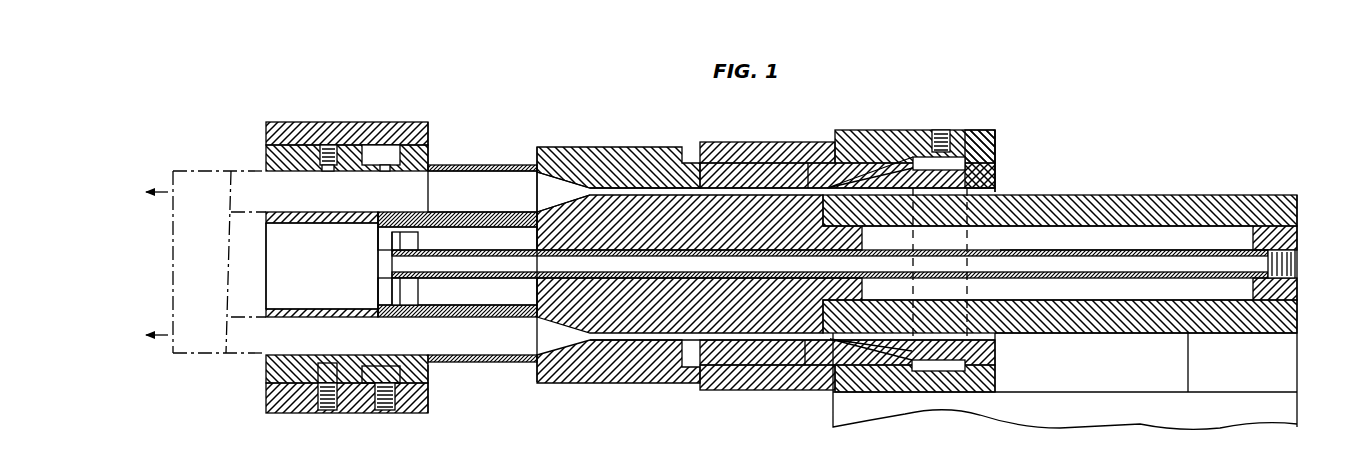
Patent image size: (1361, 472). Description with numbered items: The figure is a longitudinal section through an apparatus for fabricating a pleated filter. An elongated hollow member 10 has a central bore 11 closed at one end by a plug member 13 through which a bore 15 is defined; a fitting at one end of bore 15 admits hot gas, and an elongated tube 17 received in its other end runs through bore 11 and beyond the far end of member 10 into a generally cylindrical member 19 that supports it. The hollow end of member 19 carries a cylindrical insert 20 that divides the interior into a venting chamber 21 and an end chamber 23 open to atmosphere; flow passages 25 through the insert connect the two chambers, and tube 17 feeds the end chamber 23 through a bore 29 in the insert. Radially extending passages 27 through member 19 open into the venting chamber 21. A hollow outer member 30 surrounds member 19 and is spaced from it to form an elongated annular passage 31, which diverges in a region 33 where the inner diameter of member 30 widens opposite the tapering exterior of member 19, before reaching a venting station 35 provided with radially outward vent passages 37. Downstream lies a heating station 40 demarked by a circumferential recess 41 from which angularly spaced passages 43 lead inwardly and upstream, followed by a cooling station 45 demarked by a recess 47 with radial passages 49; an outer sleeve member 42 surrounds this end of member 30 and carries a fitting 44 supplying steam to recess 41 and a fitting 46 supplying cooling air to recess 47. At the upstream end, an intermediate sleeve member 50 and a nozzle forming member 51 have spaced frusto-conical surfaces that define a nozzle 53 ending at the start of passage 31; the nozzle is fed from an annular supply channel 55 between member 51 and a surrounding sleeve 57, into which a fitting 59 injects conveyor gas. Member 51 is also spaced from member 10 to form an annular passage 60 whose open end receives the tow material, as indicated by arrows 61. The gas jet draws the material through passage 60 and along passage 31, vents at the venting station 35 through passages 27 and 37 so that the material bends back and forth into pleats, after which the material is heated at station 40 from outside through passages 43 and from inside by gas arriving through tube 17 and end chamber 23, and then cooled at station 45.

The elongated hollow member 10 is at (1237, 195).
The central bore 11 is at (1158, 230).
The plug member 13 is at (1298, 232).
The bore 15 is at (1300, 268).
The elongated tube 17 is at (1093, 250).
The cylindrical member 19 is at (667, 320).
The cylindrical insert 20 is at (428, 227).
The venting chamber 21 is at (524, 238).
The end chamber 23 is at (273, 292).
The flow passages 25 is at (392, 240).
The radially-extending passages 27 is at (517, 212).
The bore 29 is at (396, 264).
The hollow outer member 30 is at (645, 150).
The annular passage 31 is at (737, 186).
The region 33 is at (560, 182).
The venting station 35 is at (510, 182).
The vent passages 37 is at (497, 165).
The heating station 40 is at (427, 375).
The circumferential recess 41 is at (390, 150).
The outer sleeve member 42 is at (267, 398).
The passages 43 is at (388, 169).
The fitting 44 is at (388, 413).
The cooling station 45 is at (318, 200).
The fitting 46 is at (328, 413).
The circumferential recess 47 is at (330, 150).
The passages 49 is at (327, 174).
The intermediate sleeve member 50 is at (818, 147).
The nozzle forming member 51 is at (1003, 187).
The frusto-conical nozzle 53 is at (877, 172).
The annular supply channel 55 is at (925, 157).
The sleeve 57 is at (985, 132).
The fitting 59 is at (943, 130).
The annular passage 60 is at (995, 358).
The arrows 61 is at (1008, 188).